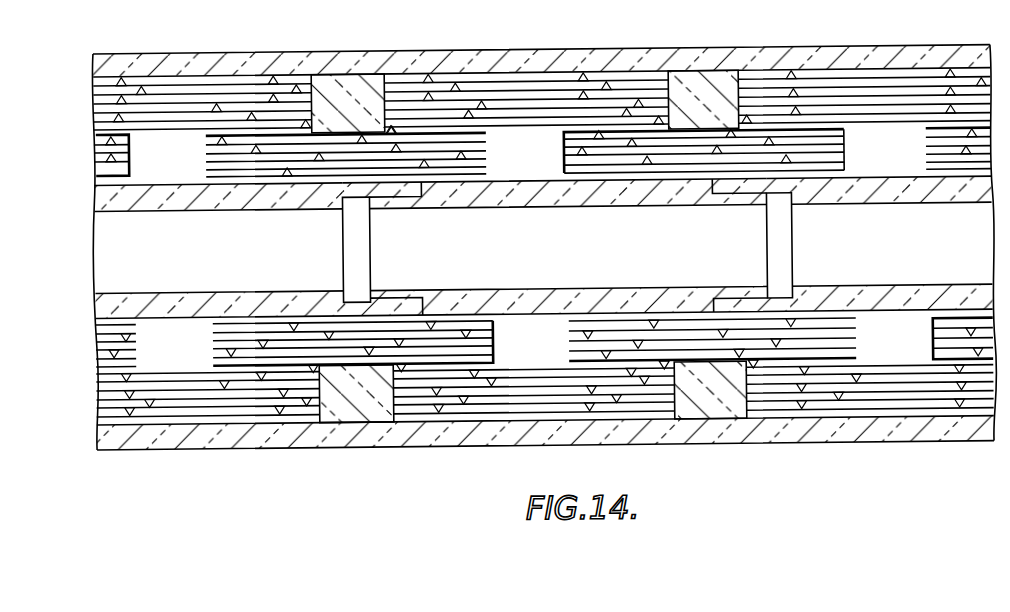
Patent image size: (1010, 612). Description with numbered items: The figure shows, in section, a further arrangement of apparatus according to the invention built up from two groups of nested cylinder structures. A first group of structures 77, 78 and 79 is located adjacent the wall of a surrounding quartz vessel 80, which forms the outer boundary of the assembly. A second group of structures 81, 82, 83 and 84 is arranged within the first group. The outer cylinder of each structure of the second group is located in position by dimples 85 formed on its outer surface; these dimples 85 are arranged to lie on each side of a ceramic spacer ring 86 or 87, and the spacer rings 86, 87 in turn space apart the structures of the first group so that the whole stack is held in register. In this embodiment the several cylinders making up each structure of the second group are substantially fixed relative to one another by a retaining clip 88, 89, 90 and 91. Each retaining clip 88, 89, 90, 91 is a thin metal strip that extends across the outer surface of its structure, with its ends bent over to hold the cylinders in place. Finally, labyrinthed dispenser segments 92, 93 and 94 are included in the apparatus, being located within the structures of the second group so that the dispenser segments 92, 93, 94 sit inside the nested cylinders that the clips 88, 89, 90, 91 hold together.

The structure of the first group 77 is at (223, 408).
The structure of the first group 78 is at (558, 408).
The structure of the first group 79 is at (947, 414).
The quartz vessel 80 is at (830, 436).
The structure of the second group 81 is at (97, 172).
The structure of the second group 82 is at (284, 182).
The structure of the second group 83 is at (680, 182).
The structure of the second group 84 is at (958, 181).
The dimples 85 is at (308, 124).
The ceramic spacer ring 86 is at (352, 95).
The ceramic spacer ring 87 is at (706, 101).
The retaining clip 88 is at (133, 172).
The retaining clip 89 is at (495, 351).
The retaining clip 90 is at (852, 160).
The retaining clip 91 is at (932, 351).
The labyrinthed dispenser segment 92 is at (230, 201).
The labyrinthed dispenser segment 93 is at (482, 199).
The labyrinthed dispenser segment 94 is at (862, 203).